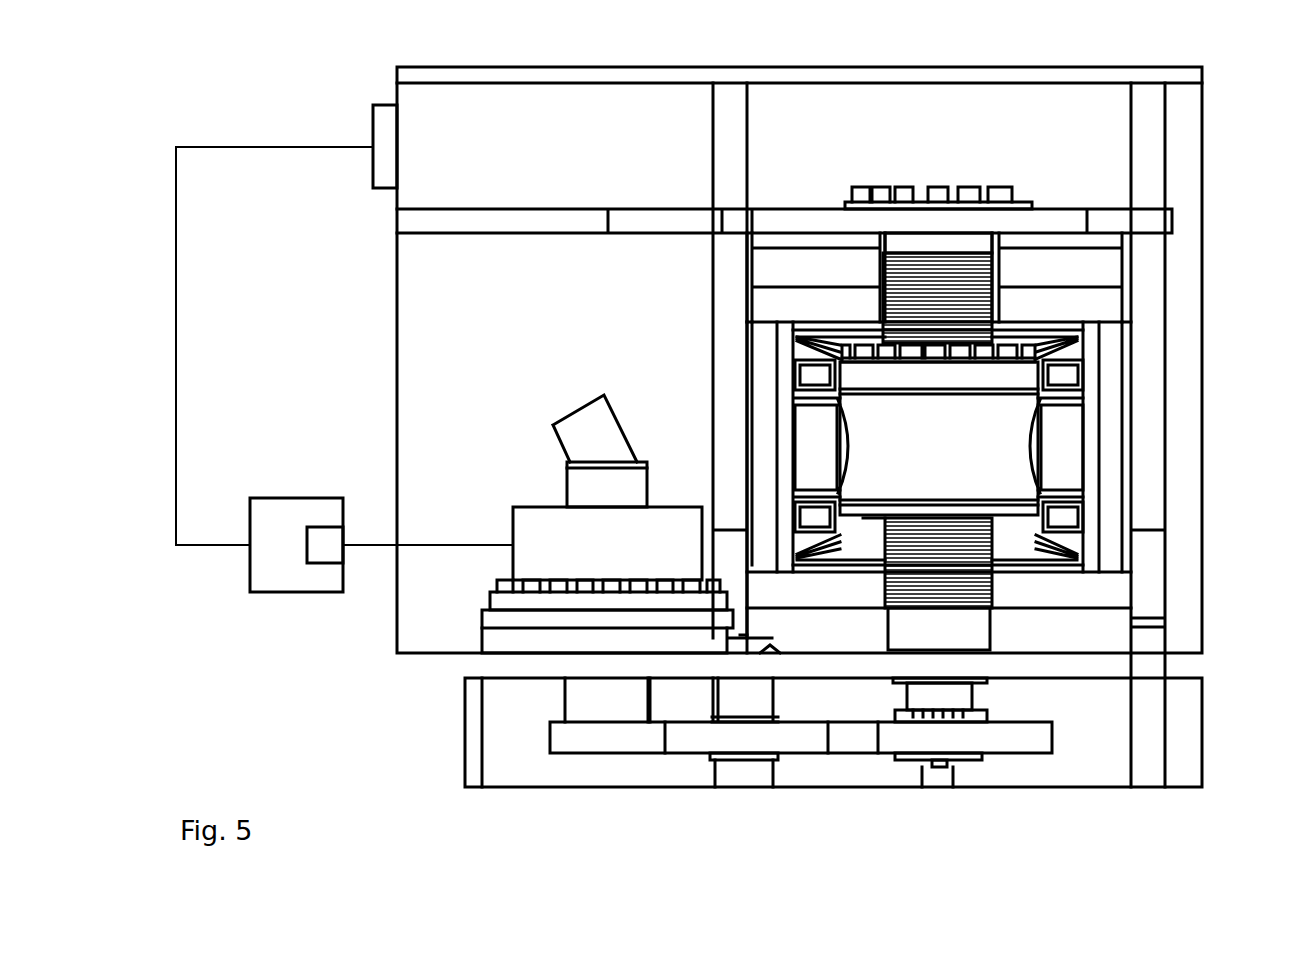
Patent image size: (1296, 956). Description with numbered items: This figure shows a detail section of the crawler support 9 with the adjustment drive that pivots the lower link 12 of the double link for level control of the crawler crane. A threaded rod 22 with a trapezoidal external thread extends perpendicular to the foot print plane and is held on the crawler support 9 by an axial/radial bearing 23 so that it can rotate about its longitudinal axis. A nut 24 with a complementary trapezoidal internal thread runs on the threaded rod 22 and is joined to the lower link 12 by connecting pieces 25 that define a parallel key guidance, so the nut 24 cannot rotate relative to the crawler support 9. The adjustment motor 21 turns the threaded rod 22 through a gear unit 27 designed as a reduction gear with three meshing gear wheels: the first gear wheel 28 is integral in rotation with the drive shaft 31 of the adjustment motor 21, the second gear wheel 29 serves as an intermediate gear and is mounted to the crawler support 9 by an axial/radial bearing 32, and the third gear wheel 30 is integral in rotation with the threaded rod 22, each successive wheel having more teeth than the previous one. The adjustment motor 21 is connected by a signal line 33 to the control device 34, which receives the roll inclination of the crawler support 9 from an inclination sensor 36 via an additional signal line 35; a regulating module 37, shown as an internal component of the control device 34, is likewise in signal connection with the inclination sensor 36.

The crawler support 9 is at (1193, 295).
The lower link 12 is at (1117, 403).
The adjustment motor 21 is at (530, 525).
The threaded rod 22 is at (993, 583).
The axial/radial bearing 23 is at (910, 242).
The nut 24 is at (995, 437).
The connecting pieces 25 is at (828, 478).
The gear unit 27 is at (682, 760).
The first gear wheel 28 is at (605, 745).
The second gear wheel 29 is at (797, 742).
The third gear wheel 30 is at (1017, 742).
The drive shaft 31 is at (622, 712).
The axial/radial bearing 32 is at (730, 762).
The signal line 33 is at (374, 547).
The control device 34 is at (280, 583).
The additional signal line 35 is at (275, 147).
The inclination sensor 36 is at (383, 110).
The regulating module 37 is at (324, 553).